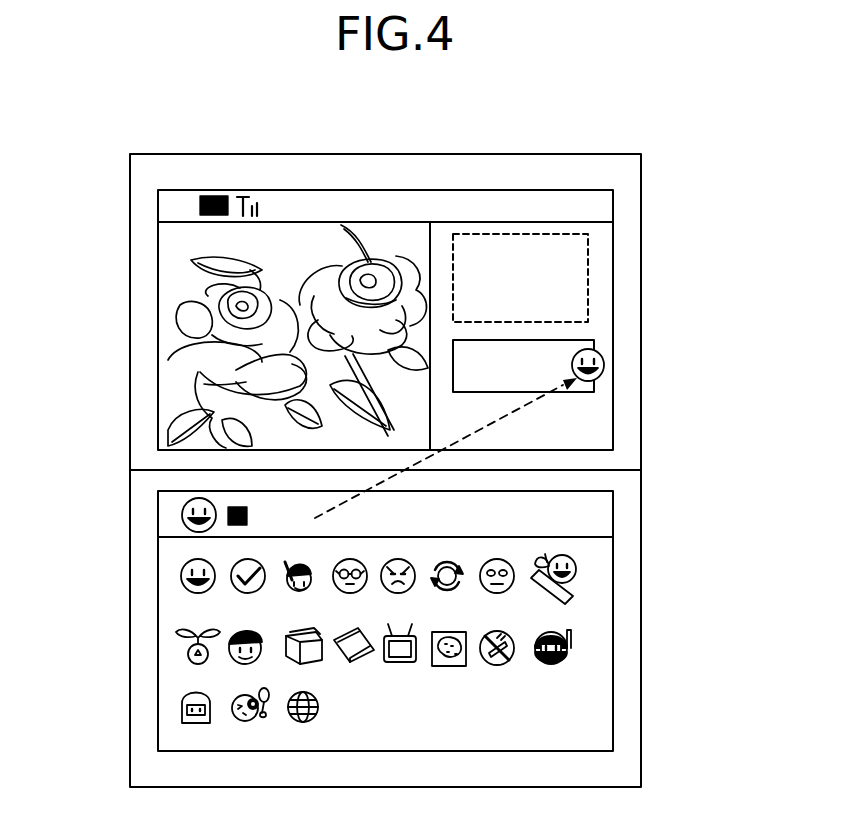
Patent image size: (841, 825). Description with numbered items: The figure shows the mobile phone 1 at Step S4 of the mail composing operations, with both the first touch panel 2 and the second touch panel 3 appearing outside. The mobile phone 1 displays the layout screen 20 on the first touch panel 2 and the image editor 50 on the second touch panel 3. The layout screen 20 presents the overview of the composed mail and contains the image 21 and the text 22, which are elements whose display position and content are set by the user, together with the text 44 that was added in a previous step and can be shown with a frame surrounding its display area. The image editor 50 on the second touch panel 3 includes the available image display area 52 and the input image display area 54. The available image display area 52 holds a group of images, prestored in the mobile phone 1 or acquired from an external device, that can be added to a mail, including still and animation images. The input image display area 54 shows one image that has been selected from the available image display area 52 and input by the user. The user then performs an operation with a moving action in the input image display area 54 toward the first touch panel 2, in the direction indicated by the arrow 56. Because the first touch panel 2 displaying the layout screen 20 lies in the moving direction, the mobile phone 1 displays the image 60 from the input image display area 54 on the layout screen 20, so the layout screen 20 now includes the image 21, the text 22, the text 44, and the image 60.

The mobile phone 1 is at (656, 186).
The first touch panel 2 is at (603, 290).
The second touch panel 3 is at (590, 572).
The layout screen 20 is at (392, 222).
The image 21 is at (198, 241).
The text 22 is at (588, 253).
The text 44 is at (594, 343).
The image editor 50 is at (613, 662).
The available image display area 52 is at (178, 572).
The input image display area 54 is at (180, 517).
The arrow 56 is at (432, 457).
The image 60 is at (604, 368).
The Step S4 is at (106, 202).